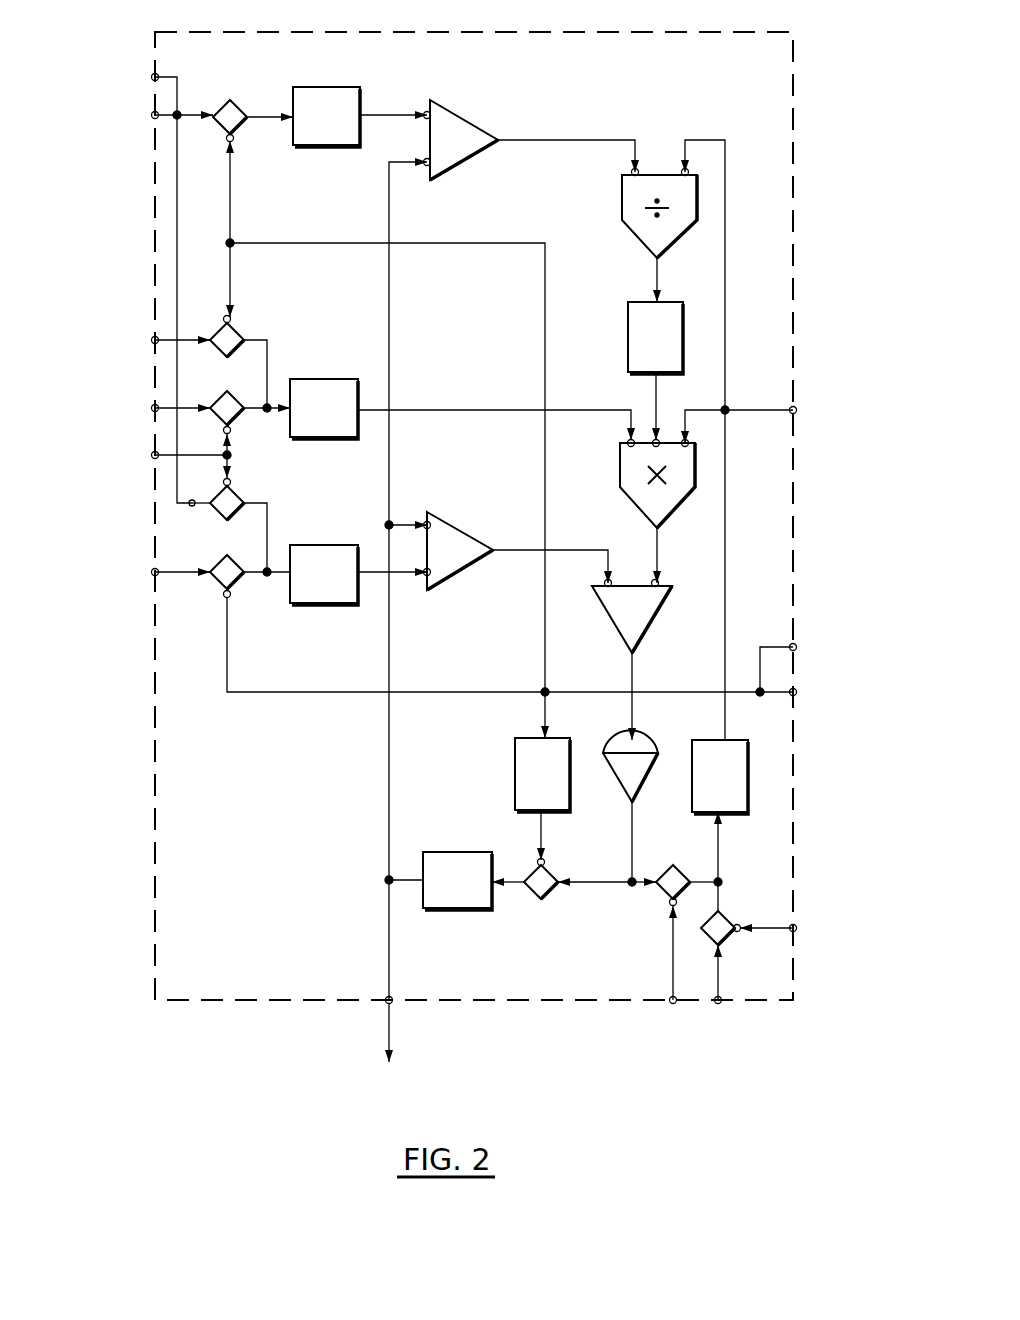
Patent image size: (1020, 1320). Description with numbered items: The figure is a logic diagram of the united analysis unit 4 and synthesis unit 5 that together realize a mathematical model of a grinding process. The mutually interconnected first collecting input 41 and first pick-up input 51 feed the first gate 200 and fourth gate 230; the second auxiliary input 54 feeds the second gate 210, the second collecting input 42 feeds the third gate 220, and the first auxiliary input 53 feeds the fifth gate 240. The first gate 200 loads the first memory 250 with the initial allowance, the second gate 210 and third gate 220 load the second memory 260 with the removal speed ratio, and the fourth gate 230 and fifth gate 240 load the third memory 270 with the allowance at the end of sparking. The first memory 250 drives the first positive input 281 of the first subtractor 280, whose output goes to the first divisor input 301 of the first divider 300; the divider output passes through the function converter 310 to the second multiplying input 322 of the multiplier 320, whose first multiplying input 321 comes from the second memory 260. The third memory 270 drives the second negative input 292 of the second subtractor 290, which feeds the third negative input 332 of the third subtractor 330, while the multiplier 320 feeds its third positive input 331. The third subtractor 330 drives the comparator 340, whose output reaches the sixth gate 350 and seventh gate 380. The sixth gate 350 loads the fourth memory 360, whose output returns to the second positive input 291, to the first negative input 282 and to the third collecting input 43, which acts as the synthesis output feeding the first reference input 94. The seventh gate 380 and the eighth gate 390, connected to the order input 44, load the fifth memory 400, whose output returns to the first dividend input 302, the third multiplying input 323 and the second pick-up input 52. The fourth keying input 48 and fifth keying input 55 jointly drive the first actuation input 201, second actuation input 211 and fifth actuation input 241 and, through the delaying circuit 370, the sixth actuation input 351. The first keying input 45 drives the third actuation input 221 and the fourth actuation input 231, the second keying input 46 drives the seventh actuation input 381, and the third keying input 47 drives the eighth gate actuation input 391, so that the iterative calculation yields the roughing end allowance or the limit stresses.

The analysis unit 4 is at (474, 500).
The synthesis unit 5 is at (595, 32).
The first collecting input 41 is at (159, 285).
The second collecting input 42 is at (164, 408).
The third collecting input 43 is at (404, 1012).
The order input 44 is at (717, 988).
The first keying input 45 is at (174, 455).
The second keying input 46 is at (672, 1014).
The third keying input 47 is at (784, 928).
The fourth keying input 48 is at (794, 663).
The first pick-up input 51 is at (168, 115).
The second pick-up input 52 is at (776, 410).
The first auxiliary input 53 is at (164, 572).
The second auxiliary input 54 is at (164, 340).
The fifth keying input 55 is at (809, 692).
The first reference input 94 is at (385, 1048).
The first gate 200 is at (224, 106).
The first actuation input 201 is at (253, 191).
The second gate 210 is at (238, 328).
The second actuation input 211 is at (209, 283).
The third gate 220 is at (234, 396).
The third actuation input 221 is at (250, 437).
The fourth gate 230 is at (238, 496).
The fourth actuation input 231 is at (205, 470).
The fifth gate 240 is at (222, 558).
The fifth actuation input 241 is at (509, 644).
The first memory 250 is at (360, 117).
The second memory 260 is at (460, 409).
The third memory 270 is at (358, 575).
The first subtractor 280 is at (466, 120).
The first positive input 281 is at (408, 102).
The first negative input 282 is at (408, 566).
The second subtractor 290 is at (462, 528).
The second positive input 291 is at (411, 511).
The second negative input 292 is at (408, 559).
The first divider 300 is at (622, 216).
The first divisor input 301 is at (618, 162).
The first dividend input 302 is at (707, 440).
The function converter 310 is at (655, 371).
The multiplier 320 is at (620, 470).
The first multiplying input 321 is at (607, 432).
The second multiplying input 322 is at (635, 415).
The third multiplying input 323 is at (706, 428).
The third subtractor 330 is at (612, 622).
The third positive input 331 is at (677, 572).
The third negative input 332 is at (585, 573).
The comparator 340 is at (612, 774).
The sixth gate 350 is at (552, 892).
The sixth actuation input 351 is at (568, 854).
The fourth memory 360 is at (440, 881).
The delaying circuit 370 is at (400, 551).
The seventh gate 380 is at (684, 874).
The seventh actuation input 381 is at (652, 946).
The eighth gate 390 is at (728, 916).
The eighth gate actuation input 391 is at (754, 944).
The fifth memory 400 is at (720, 811).